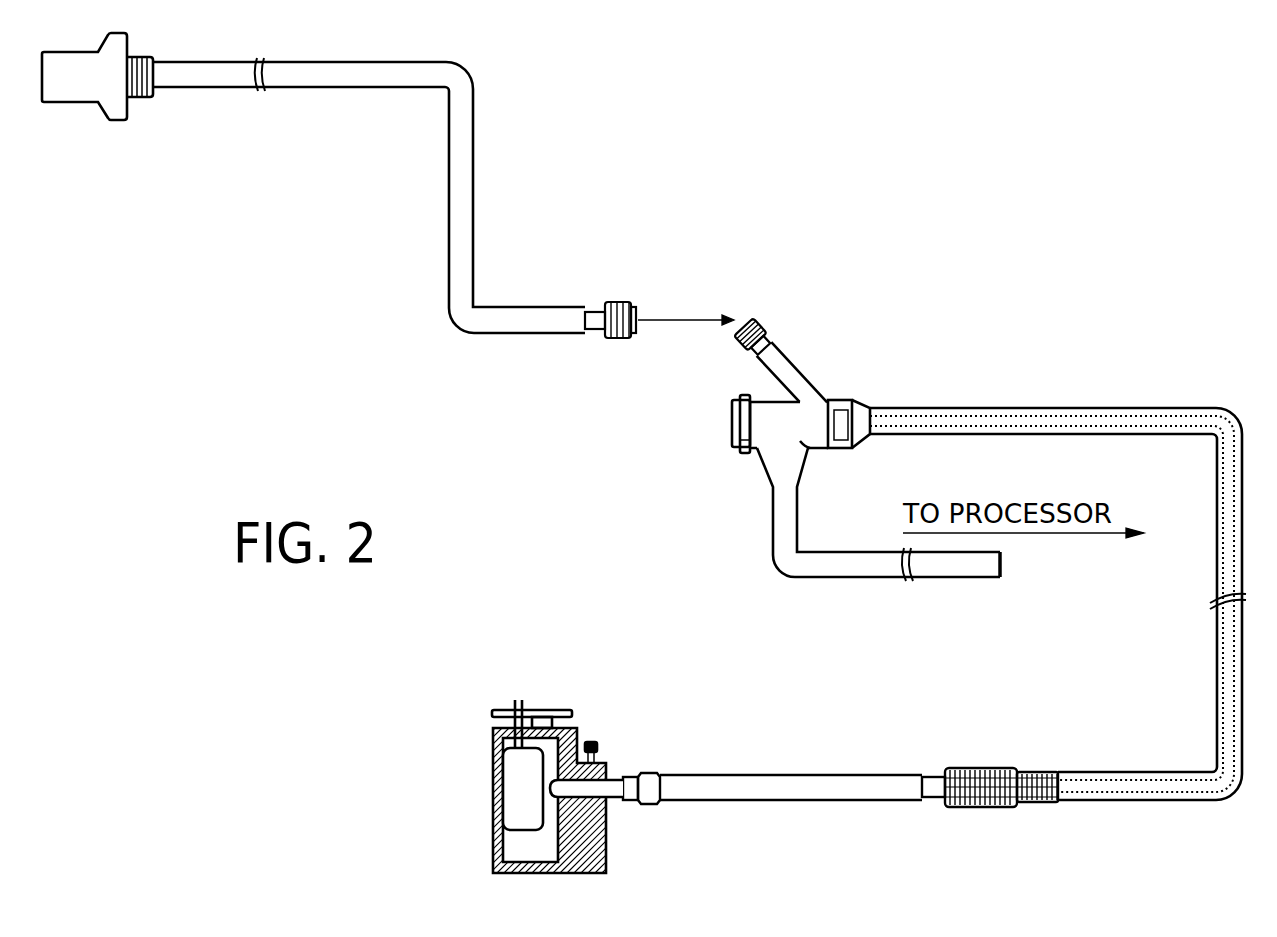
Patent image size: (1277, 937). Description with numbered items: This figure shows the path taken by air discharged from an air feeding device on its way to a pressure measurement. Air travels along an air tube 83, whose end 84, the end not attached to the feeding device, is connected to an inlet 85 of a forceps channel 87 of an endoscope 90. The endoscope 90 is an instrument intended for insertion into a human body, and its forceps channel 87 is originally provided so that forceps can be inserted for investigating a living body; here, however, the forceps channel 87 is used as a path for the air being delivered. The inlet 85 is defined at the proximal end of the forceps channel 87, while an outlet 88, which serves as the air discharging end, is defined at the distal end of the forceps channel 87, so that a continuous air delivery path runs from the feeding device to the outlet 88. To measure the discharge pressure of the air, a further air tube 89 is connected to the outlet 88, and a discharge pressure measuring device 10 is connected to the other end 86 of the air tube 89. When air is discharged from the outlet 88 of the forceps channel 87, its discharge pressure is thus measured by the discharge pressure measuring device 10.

The air tube 83 is at (305, 66).
The end of the air tube 84 is at (618, 302).
The inlet of the forceps channel 85 is at (762, 324).
The endoscope 90 is at (805, 368).
The forceps channel 87 is at (1081, 408).
The outlet of the forceps channel 88 is at (933, 778).
The air tube 89 is at (785, 786).
The other end of the air tube 86 is at (648, 773).
The discharge pressure measuring device 10 is at (587, 700).